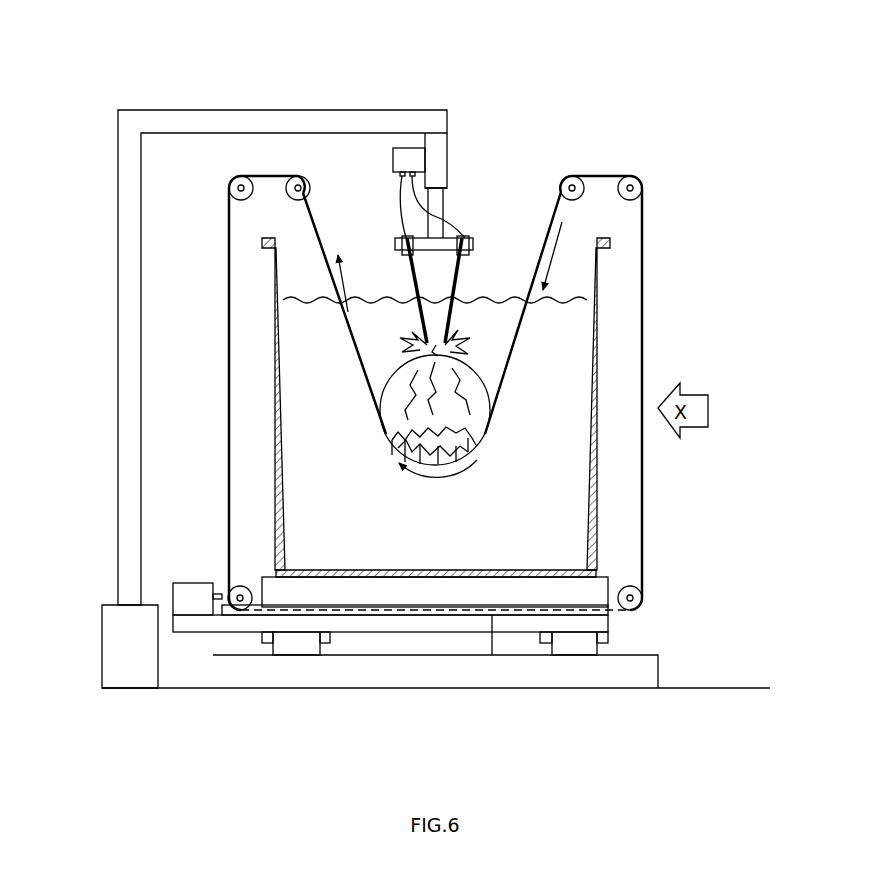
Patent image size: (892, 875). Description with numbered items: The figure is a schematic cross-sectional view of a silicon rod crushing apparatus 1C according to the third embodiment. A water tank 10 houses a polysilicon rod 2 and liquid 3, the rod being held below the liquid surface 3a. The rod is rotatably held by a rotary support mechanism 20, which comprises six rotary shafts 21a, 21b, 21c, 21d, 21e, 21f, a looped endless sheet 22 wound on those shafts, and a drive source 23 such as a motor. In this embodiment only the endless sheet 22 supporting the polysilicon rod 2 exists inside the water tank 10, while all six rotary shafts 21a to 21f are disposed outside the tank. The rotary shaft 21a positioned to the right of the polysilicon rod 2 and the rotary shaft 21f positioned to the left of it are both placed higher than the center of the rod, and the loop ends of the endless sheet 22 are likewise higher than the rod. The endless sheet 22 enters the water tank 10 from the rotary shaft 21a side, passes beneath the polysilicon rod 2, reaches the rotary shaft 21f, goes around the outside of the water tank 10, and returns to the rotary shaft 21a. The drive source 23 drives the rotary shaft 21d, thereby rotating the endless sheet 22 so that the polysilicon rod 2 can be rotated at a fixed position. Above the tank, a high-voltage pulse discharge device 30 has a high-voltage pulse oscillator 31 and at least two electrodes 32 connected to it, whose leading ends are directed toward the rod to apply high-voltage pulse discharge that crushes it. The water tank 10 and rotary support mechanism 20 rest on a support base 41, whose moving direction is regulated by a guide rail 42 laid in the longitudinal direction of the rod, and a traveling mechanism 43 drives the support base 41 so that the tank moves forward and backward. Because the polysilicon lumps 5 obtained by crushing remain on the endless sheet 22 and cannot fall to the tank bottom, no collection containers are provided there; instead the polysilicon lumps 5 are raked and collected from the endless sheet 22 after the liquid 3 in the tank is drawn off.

The silicon rod crushing apparatus 1C is at (397, 35).
The polysilicon rod 2 is at (470, 380).
The liquid 3 is at (553, 368).
The liquid surface 3a is at (500, 300).
The polysilicon lumps 5 is at (390, 445).
The water tank 10 is at (600, 338).
The rotary support mechanism 20 is at (372, 483).
The rotary shaft 21a is at (566, 180).
The rotary shaft 21b is at (631, 178).
The rotary shaft 21c is at (640, 602).
The rotary shaft 21d is at (243, 588).
The rotary shaft 21e is at (242, 178).
The rotary shaft 21f is at (304, 180).
The endless sheet 22 is at (313, 190).
The drive source 23 is at (192, 583).
The high-voltage pulse discharge device 30 is at (493, 113).
The high-voltage pulse oscillator 31 is at (408, 155).
The electrodes 32 is at (413, 280).
The support base 41 is at (610, 590).
The guide rail 42 is at (608, 640).
The traveling mechanism 43 is at (498, 643).